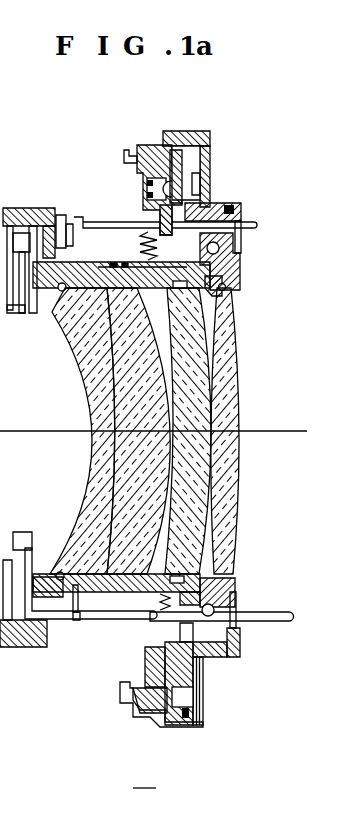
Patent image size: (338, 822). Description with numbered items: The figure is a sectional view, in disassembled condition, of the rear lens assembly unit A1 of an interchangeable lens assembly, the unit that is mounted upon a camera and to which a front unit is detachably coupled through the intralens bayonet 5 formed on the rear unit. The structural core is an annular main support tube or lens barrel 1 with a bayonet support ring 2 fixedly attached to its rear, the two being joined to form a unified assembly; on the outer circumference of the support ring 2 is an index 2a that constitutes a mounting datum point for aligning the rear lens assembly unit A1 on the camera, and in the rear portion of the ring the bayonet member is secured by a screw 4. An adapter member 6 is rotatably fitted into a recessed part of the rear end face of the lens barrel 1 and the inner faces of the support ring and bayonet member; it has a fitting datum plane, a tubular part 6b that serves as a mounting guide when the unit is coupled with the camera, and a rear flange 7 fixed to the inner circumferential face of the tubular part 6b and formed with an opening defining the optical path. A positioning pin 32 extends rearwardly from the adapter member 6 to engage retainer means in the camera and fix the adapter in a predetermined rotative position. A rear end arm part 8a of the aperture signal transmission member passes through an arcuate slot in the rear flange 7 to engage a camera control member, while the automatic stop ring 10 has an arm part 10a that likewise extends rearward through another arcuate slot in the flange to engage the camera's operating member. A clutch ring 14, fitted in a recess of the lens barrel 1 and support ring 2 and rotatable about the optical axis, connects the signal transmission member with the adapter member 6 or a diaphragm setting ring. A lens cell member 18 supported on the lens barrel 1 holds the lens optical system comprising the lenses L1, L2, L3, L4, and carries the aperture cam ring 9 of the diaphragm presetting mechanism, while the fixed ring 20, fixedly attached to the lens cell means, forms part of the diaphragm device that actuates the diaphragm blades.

The lens barrel 1 is at (148, 150).
The bayonet support ring 2 is at (200, 132).
The index 2a is at (183, 130).
The screw 4 is at (193, 727).
The intralens bayonet 5 is at (124, 155).
The adapter member 6 is at (188, 168).
The tubular part 6b is at (226, 657).
The rear flange 7 is at (240, 636).
The rear end arm part 8a is at (281, 620).
The aperture cam ring 9 is at (62, 623).
The automatic stop ring 10 is at (97, 222).
The arm part 10a is at (258, 224).
The clutch ring 14 is at (145, 661).
The lens cell member 18 is at (14, 210).
The fixed ring 20 is at (22, 313).
The positioning pin 32 is at (200, 191).
The rear lens assembly unit A1 is at (165, 539).
The lens L1 is at (230, 344).
The lens L2 is at (187, 386).
The lens L3 is at (137, 393).
The lens L4 is at (105, 473).